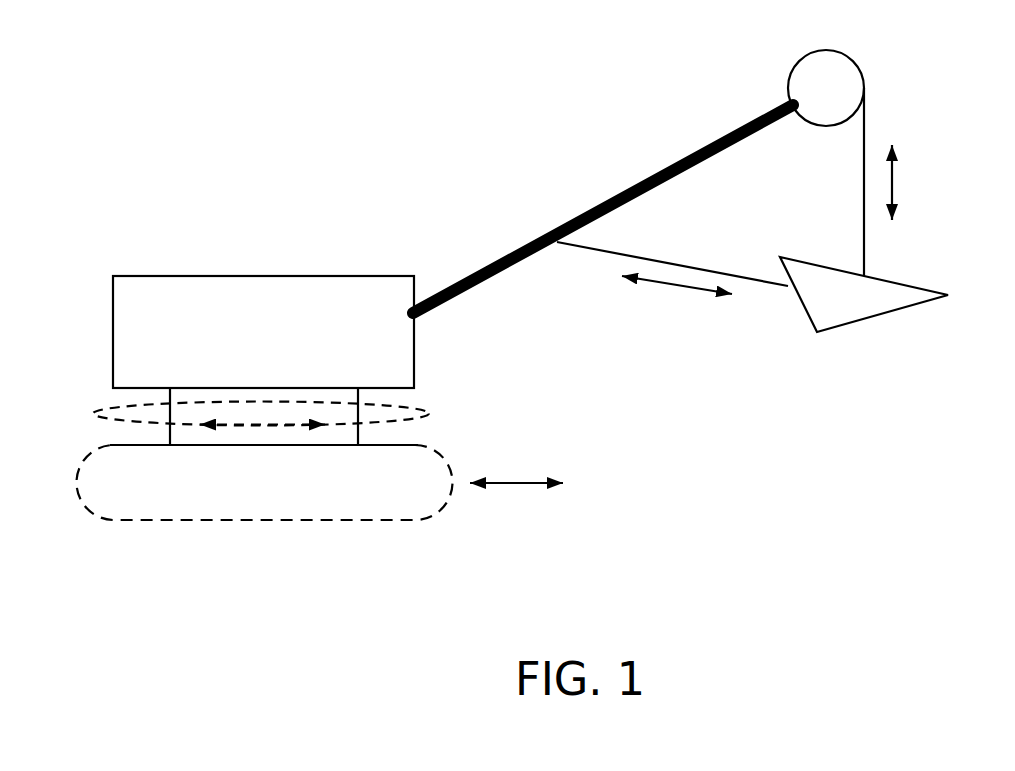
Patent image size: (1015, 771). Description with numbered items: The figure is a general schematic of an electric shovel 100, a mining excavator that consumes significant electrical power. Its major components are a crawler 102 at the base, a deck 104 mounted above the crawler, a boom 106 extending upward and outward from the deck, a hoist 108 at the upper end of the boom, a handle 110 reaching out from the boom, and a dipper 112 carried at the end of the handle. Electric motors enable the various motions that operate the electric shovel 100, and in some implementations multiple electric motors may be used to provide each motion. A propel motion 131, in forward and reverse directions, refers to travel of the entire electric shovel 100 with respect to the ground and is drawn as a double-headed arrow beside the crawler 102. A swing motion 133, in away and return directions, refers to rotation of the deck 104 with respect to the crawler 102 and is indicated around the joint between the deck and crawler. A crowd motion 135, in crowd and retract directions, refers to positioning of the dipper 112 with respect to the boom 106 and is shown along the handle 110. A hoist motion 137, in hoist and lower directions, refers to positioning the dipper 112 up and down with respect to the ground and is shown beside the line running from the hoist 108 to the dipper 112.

The electric shovel 100 is at (754, 471).
The crawler 102 is at (357, 500).
The deck 104 is at (124, 284).
The boom 106 is at (518, 247).
The hoist 108 is at (826, 58).
The handle 110 is at (720, 272).
The dipper 112 is at (855, 313).
The propel motion 131 is at (518, 486).
The swing motion 133 is at (430, 411).
The crowd motion 135 is at (663, 288).
The hoist motion 137 is at (896, 180).